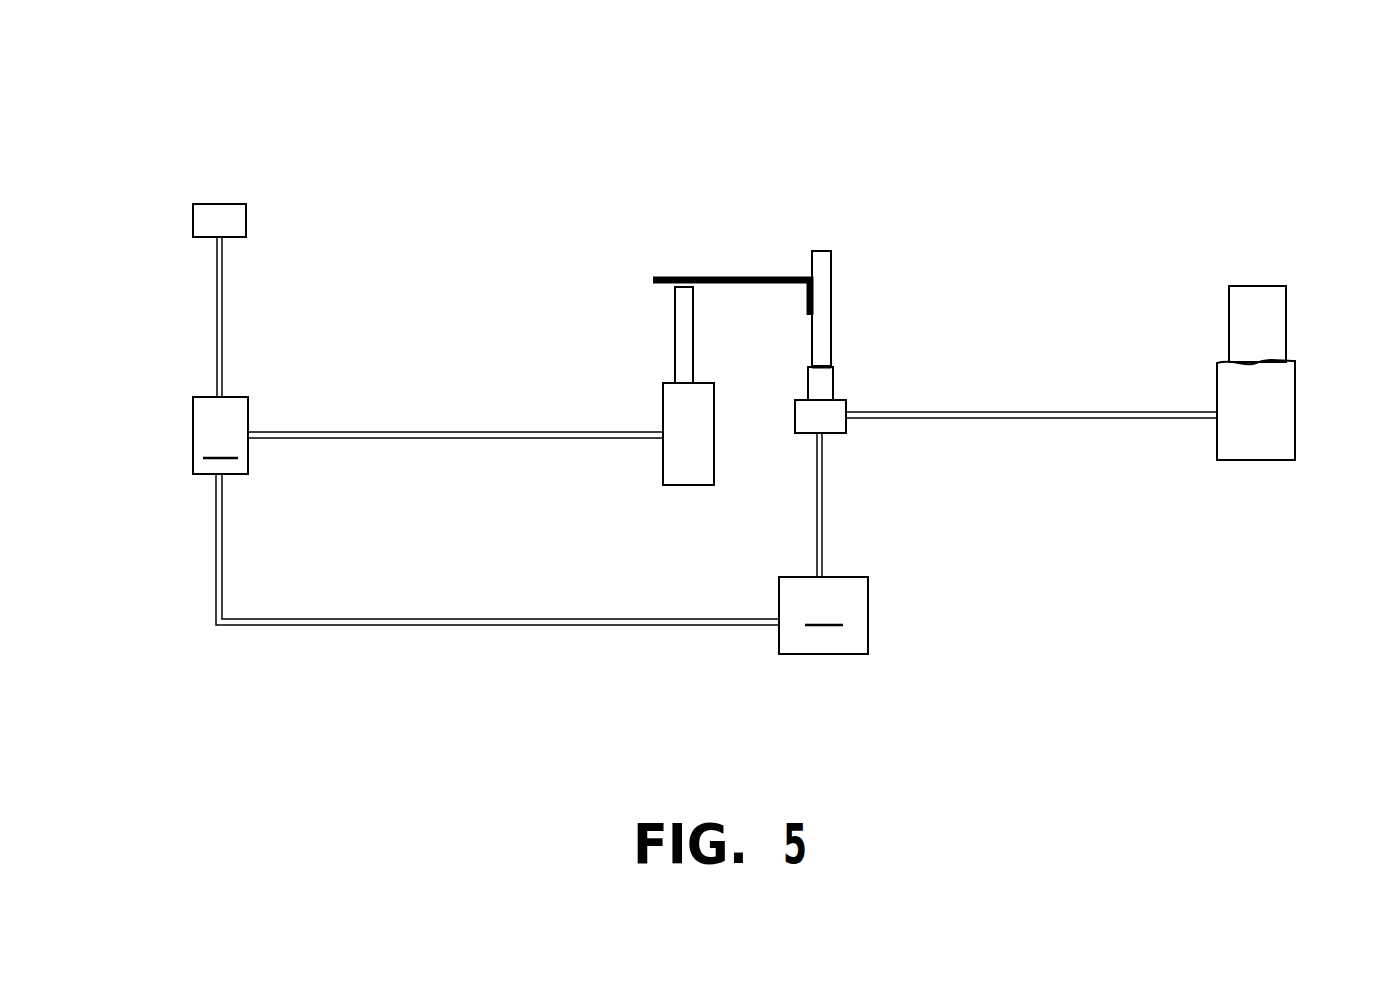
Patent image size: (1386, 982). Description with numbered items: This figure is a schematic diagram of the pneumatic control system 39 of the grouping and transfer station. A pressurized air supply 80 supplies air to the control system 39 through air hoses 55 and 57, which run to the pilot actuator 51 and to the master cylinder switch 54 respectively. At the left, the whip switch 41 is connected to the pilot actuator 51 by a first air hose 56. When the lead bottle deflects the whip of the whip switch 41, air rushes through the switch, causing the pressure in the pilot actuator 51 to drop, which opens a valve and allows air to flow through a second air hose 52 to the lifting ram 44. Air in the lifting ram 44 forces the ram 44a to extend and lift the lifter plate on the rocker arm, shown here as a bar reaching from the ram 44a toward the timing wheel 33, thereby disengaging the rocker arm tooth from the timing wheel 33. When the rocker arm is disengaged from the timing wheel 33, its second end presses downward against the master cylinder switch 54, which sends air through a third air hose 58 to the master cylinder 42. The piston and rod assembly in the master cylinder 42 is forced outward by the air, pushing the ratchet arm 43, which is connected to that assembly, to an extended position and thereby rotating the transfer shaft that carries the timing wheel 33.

The pneumatic control system 39 is at (619, 178).
The whip switch 41 is at (215, 218).
The first air hose 56 is at (218, 300).
The pilot actuator 51 is at (220, 435).
The second air hose 52 is at (480, 432).
The air hose 55 is at (492, 620).
The pressurized air supply 80 is at (823, 615).
The air hose 57 is at (818, 492).
The lifting ram 44 is at (683, 445).
The ram 44a is at (675, 348).
The timing wheel 33 is at (822, 320).
The master cylinder switch 54 is at (819, 415).
The third air hose 58 is at (1022, 412).
The ratchet arm 43 is at (1260, 322).
The master cylinder 42 is at (1280, 445).